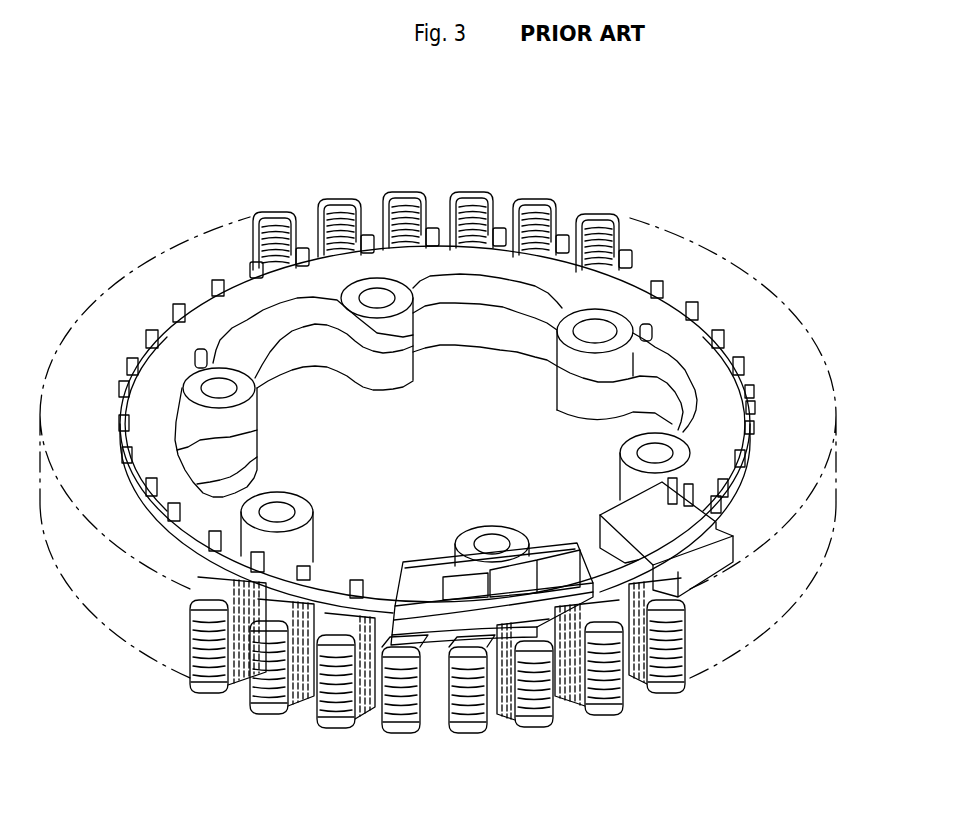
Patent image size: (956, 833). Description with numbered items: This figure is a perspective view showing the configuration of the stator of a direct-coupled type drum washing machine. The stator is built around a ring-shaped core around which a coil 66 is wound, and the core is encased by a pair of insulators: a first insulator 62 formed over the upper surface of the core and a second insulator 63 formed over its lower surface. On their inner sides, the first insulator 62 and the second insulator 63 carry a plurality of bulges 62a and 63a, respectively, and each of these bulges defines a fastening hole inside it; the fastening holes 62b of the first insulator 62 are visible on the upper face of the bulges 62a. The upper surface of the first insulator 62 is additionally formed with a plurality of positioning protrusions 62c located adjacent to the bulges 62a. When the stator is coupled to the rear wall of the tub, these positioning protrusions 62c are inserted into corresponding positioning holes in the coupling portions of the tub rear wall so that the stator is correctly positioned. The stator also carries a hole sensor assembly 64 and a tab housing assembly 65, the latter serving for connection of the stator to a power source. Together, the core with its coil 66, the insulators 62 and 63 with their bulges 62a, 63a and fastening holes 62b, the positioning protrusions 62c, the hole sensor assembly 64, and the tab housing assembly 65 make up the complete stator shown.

The first insulator 62 is at (502, 295).
The bulges 62a is at (397, 330).
The fastening holes 62b is at (379, 293).
The positioning protrusions 62c is at (646, 323).
The second insulator 63 is at (281, 358).
The bulges 63a is at (368, 378).
The hole sensor assembly 64 is at (612, 510).
The tab housing assembly 65 is at (428, 565).
The coil 66 is at (463, 194).